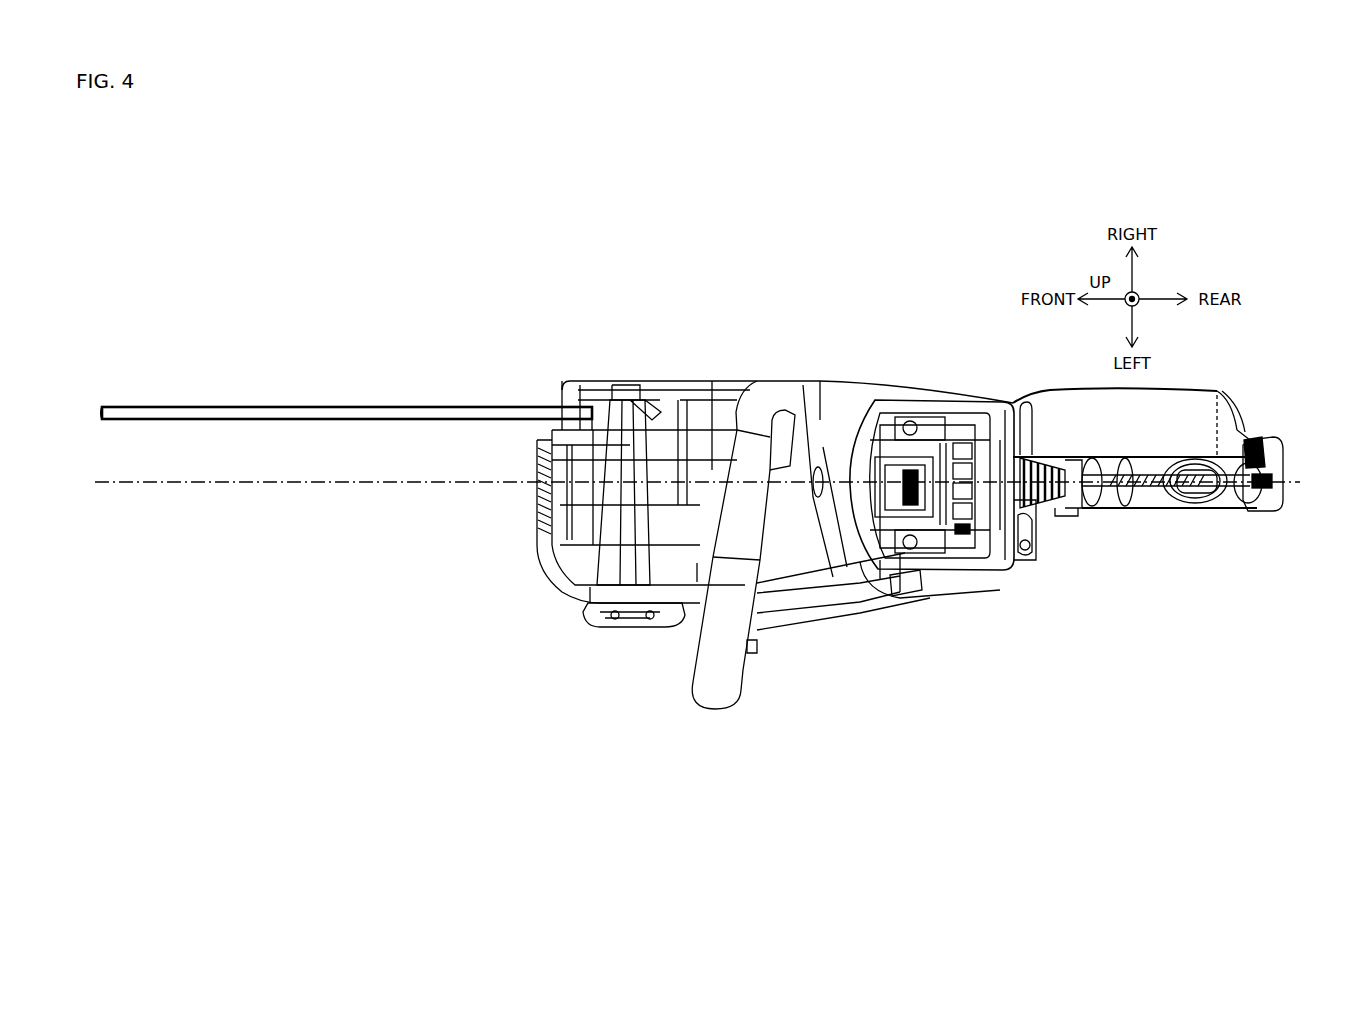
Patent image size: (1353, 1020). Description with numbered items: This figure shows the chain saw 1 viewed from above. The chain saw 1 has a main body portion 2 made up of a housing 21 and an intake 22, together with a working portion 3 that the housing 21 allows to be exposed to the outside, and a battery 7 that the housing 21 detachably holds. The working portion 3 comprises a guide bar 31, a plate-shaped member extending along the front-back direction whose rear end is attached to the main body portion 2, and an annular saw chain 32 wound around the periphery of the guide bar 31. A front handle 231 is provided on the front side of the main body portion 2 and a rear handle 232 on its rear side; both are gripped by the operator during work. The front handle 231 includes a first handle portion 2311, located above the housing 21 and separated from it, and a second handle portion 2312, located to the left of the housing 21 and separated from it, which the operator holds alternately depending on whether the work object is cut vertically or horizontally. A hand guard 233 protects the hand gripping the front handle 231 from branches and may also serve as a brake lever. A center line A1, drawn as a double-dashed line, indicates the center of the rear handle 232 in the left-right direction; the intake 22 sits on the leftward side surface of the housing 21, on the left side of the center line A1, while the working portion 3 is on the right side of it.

The chain saw 1 is at (452, 571).
The main body portion 2 is at (1017, 584).
The working portion 3 is at (411, 391).
The battery 7 is at (972, 405).
The housing 21 is at (681, 617).
The intake 22 is at (830, 612).
The guide bar 31 is at (303, 407).
The saw chain 32 is at (99, 404).
The front handle 231 is at (748, 538).
The rear handle 232 is at (1150, 508).
The hand guard 233 is at (632, 408).
The first handle portion 2311 is at (712, 380).
The second handle portion 2312 is at (711, 710).
The center line A1 is at (352, 488).